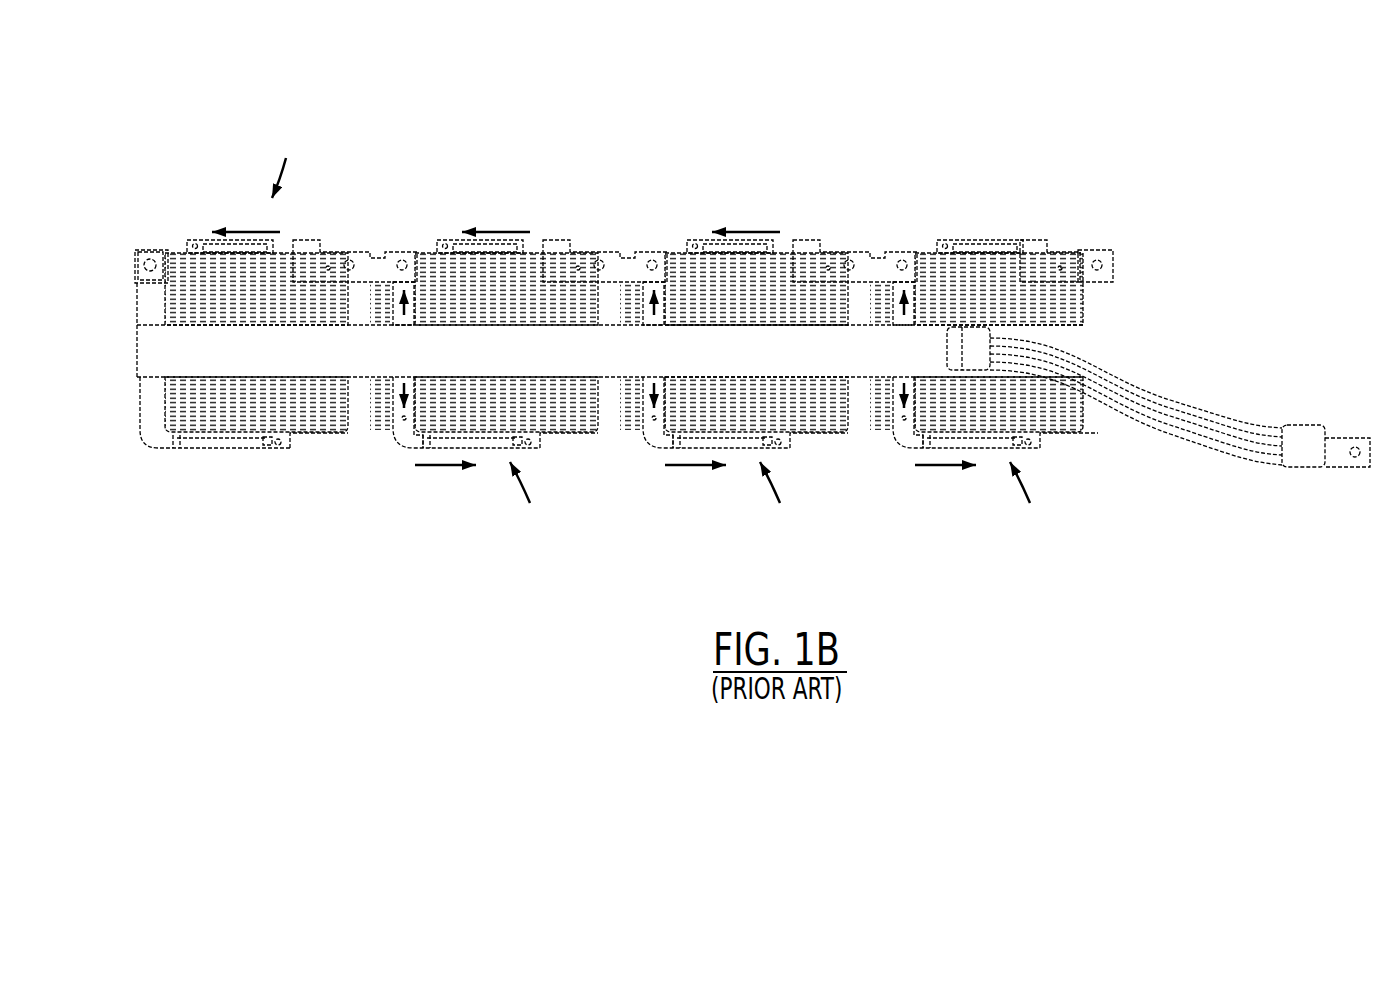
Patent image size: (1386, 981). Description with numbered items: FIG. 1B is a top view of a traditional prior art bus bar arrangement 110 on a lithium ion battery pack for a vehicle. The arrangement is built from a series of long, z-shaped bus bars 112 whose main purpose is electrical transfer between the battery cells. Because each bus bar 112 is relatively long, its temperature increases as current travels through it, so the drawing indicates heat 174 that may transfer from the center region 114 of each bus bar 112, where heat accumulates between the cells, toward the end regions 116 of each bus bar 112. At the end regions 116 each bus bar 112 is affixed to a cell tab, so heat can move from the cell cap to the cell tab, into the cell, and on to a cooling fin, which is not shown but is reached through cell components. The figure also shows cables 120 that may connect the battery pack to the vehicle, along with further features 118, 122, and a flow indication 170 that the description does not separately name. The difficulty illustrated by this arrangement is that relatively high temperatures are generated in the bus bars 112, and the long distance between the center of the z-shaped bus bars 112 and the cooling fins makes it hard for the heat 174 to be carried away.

The battery pack assembly 110 is at (822, 108).
The bus bar 112 is at (413, 278).
The center region 114 is at (173, 360).
The end region 116 is at (227, 246).
The cooling fin 118 is at (822, 325).
The cable 120 is at (1210, 422).
The heat sink fins 122 is at (162, 292).
The airflow direction 170 is at (653, 333).
The heat 174 is at (227, 227).